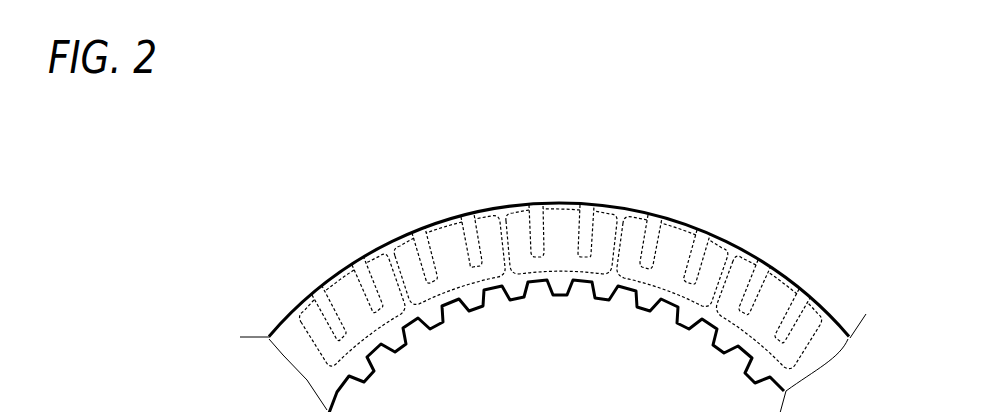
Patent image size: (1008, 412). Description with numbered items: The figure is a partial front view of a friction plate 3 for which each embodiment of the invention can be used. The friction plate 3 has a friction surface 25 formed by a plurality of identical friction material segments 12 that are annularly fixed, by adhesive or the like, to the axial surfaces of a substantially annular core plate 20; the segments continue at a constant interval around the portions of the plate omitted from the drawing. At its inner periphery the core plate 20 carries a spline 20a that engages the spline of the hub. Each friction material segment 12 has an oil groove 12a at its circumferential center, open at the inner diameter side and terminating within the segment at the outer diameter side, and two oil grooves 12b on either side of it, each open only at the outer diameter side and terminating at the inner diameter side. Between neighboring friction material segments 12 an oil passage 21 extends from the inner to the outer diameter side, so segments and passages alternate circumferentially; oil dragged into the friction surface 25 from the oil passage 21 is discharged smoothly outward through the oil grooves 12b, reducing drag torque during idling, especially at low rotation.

The friction plate 3 is at (722, 183).
The friction material segment 12 is at (323, 288).
The oil groove 12a is at (560, 226).
The oil groove 12b is at (533, 222).
The core plate 20 is at (420, 227).
The spline 20a is at (663, 308).
The oil passage 21 is at (400, 283).
The friction surface 25 is at (478, 220).